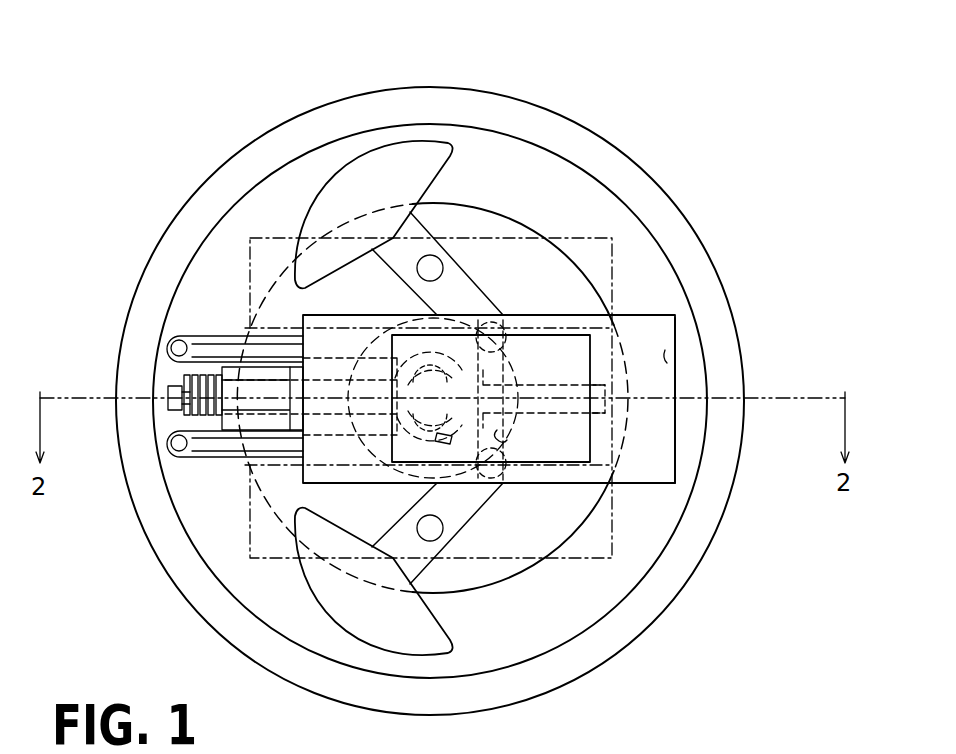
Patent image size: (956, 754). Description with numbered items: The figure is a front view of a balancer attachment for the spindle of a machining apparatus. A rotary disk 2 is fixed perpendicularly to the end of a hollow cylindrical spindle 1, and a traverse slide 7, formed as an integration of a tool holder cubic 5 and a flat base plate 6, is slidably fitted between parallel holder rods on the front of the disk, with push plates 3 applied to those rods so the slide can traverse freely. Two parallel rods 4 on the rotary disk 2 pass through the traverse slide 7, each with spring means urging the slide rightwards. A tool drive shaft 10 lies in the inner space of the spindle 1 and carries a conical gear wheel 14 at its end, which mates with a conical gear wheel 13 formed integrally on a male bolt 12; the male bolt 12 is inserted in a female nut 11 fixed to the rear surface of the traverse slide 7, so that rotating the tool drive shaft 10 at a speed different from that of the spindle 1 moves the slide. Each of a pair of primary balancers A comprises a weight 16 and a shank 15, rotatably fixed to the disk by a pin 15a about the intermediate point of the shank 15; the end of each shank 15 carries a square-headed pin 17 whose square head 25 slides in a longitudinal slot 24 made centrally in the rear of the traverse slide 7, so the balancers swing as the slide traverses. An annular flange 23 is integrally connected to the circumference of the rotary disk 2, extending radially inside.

The hollow cylindrical spindle 1 is at (470, 363).
The rotary disk 2 is at (626, 176).
The push plates 3 is at (612, 264).
The parallel rods 4 is at (167, 336).
The tool holder cubic 5 is at (667, 363).
The flat base plate 6 is at (600, 352).
The traverse slide 7 is at (677, 378).
The tool drive shaft 10 is at (424, 418).
The female nut 11 is at (225, 424).
The male bolt 12 is at (167, 398).
The conical gear wheel 13 is at (458, 448).
The conical gear wheel 14 is at (447, 419).
The shank 15 is at (418, 222).
The pin 15a is at (441, 261).
The weight 16 is at (362, 167).
The square-headed pin 17 is at (518, 340).
The annular flange 23 is at (533, 604).
The longitudinal slot 24 is at (503, 442).
The square head 25 is at (508, 335).
The primary balancer A is at (373, 330).